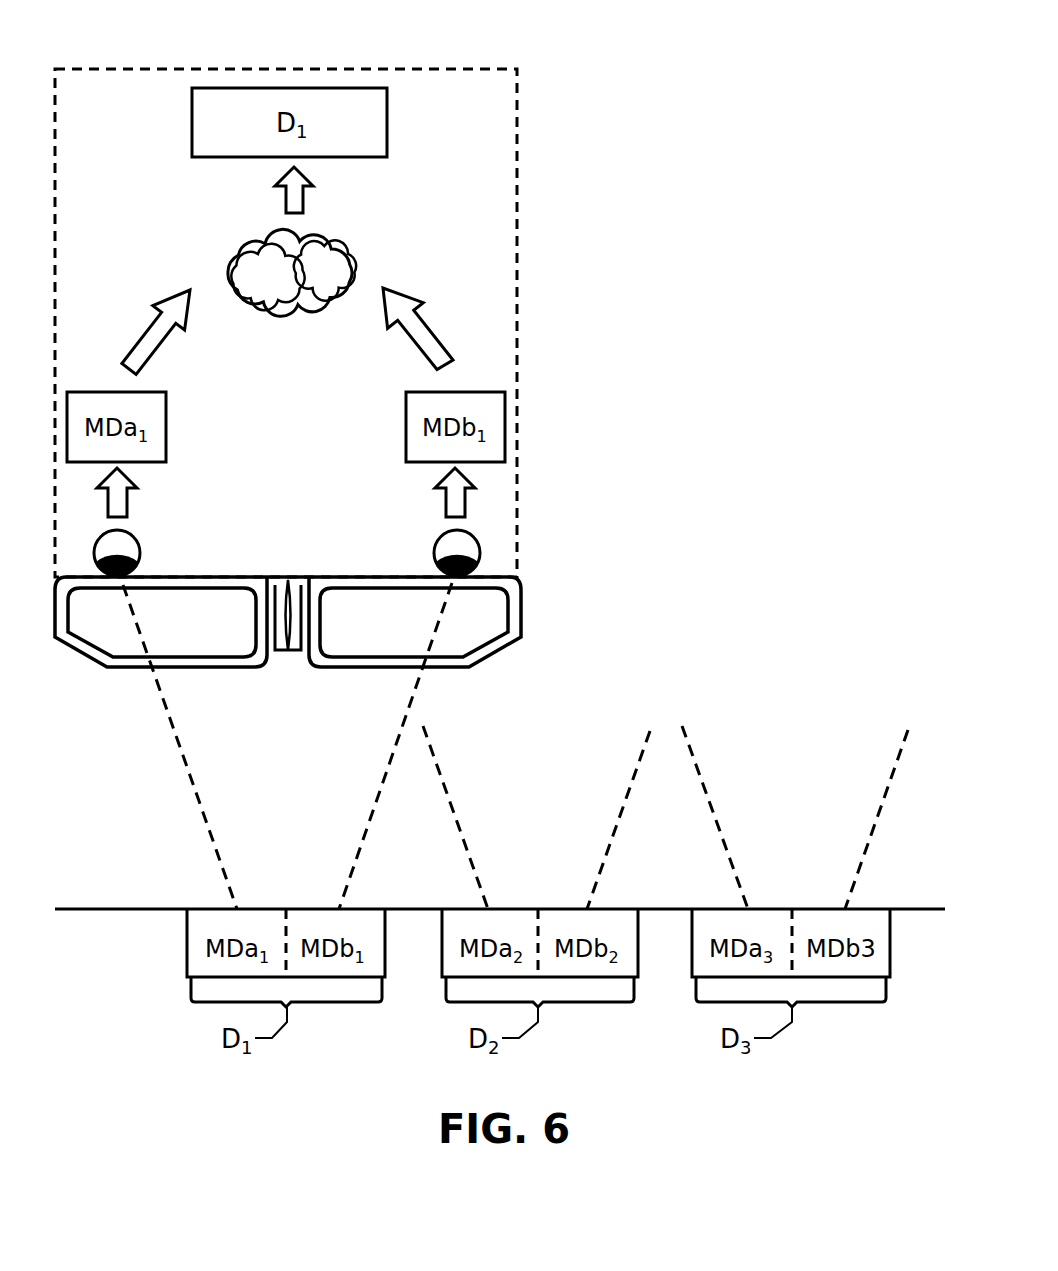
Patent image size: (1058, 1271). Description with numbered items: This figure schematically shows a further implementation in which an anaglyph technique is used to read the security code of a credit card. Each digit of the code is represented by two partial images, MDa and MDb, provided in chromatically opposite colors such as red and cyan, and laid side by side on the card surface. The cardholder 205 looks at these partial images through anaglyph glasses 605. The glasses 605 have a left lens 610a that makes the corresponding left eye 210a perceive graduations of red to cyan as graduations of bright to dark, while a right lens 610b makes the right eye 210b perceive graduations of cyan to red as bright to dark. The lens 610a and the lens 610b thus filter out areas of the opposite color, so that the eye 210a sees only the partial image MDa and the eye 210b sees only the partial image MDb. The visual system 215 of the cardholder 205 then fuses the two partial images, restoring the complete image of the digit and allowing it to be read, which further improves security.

The cardholder 205 is at (258, 68).
The visual system 215 is at (240, 250).
The left eye 210a is at (128, 532).
The right eye 210b is at (442, 532).
The anaglyph glasses 605 is at (347, 628).
The left lens 610a is at (228, 637).
The right lens 610b is at (448, 637).